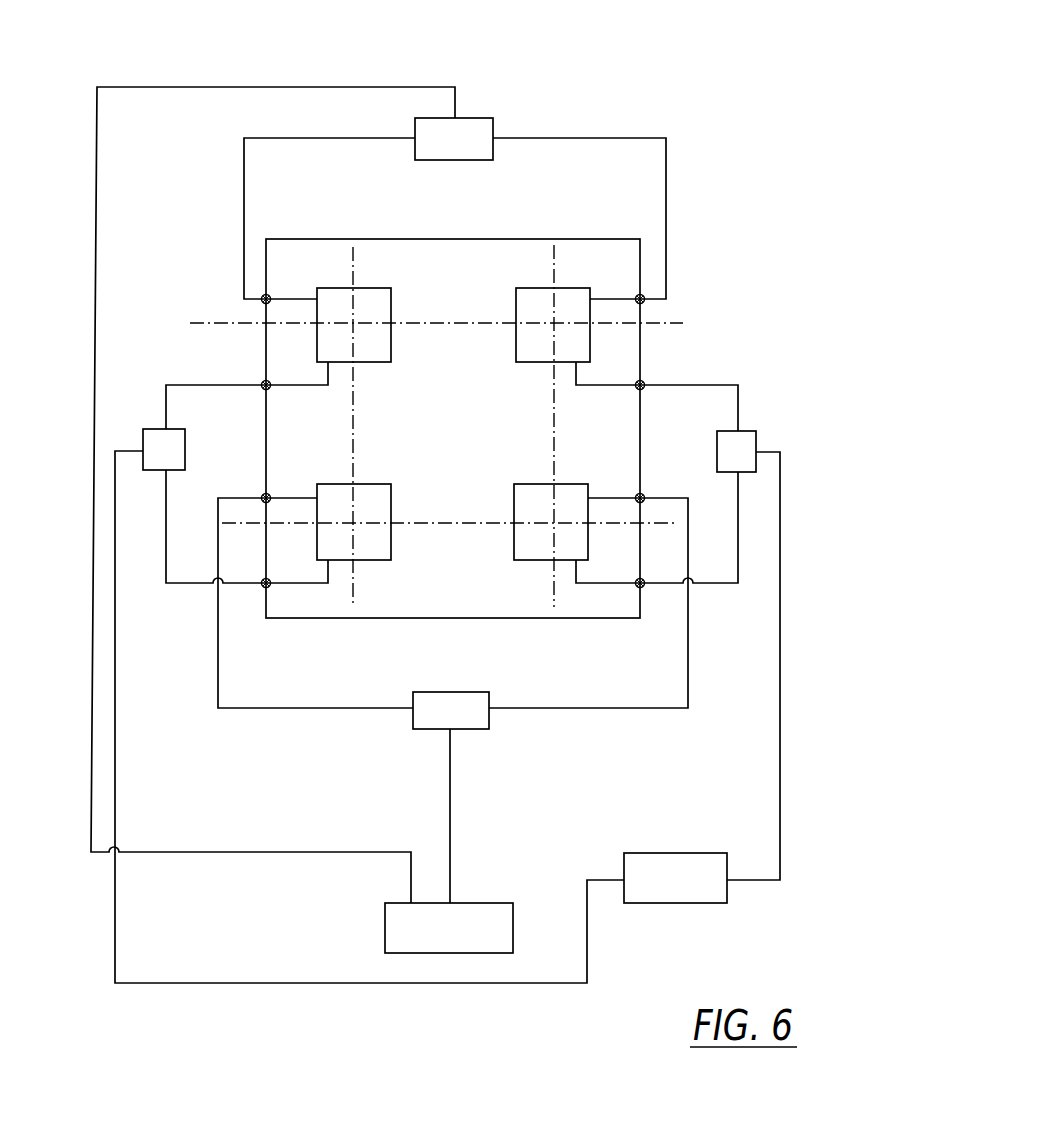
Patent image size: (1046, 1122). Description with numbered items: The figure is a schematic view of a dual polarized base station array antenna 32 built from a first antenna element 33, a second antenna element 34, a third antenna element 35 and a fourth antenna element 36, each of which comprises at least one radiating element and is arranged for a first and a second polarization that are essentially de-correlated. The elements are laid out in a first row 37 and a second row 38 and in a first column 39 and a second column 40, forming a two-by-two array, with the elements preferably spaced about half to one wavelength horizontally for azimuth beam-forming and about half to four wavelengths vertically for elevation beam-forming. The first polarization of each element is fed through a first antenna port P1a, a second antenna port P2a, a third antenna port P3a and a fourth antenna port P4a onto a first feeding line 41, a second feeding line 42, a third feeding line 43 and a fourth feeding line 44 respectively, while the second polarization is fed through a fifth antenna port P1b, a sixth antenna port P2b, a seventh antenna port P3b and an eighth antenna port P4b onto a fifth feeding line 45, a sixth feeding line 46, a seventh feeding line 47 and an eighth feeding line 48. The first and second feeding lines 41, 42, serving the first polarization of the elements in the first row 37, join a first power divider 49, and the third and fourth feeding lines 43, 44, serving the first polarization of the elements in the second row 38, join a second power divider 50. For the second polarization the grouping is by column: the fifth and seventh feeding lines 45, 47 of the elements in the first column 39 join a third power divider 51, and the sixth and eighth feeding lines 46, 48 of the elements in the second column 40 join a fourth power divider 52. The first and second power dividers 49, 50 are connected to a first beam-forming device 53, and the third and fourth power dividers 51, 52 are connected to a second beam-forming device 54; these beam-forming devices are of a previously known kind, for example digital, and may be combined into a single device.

The array antenna 32 is at (583, 232).
The first antenna element 33 is at (360, 319).
The second antenna element 34 is at (524, 319).
The third antenna element 35 is at (360, 521).
The fourth antenna element 36 is at (524, 521).
The first row 37 is at (257, 321).
The second row 38 is at (240, 523).
The first column 39 is at (352, 277).
The second column 40 is at (554, 283).
The first feeding line 41 is at (244, 200).
The second feeding line 42 is at (667, 230).
The third feeding line 43 is at (218, 668).
The fourth feeding line 44 is at (688, 663).
The fifth feeding line 45 is at (218, 385).
The sixth feeding line 46 is at (688, 385).
The seventh feeding line 47 is at (166, 550).
The eighth feeding line 48 is at (738, 545).
The first power divider 49 is at (441, 152).
The second power divider 50 is at (439, 724).
The third power divider 51 is at (153, 463).
The fourth power divider 52 is at (725, 465).
The first beam-forming device 53 is at (437, 942).
The second beam-forming device 54 is at (663, 892).
The first antenna port P1a is at (265, 296).
The fifth antenna port P1b is at (265, 382).
The second antenna port P2a is at (645, 311).
The sixth antenna port P2b is at (642, 381).
The third antenna port P3a is at (262, 494).
The seventh antenna port P3b is at (262, 586).
The fourth antenna port P4a is at (643, 492).
The eighth antenna port P4b is at (643, 585).